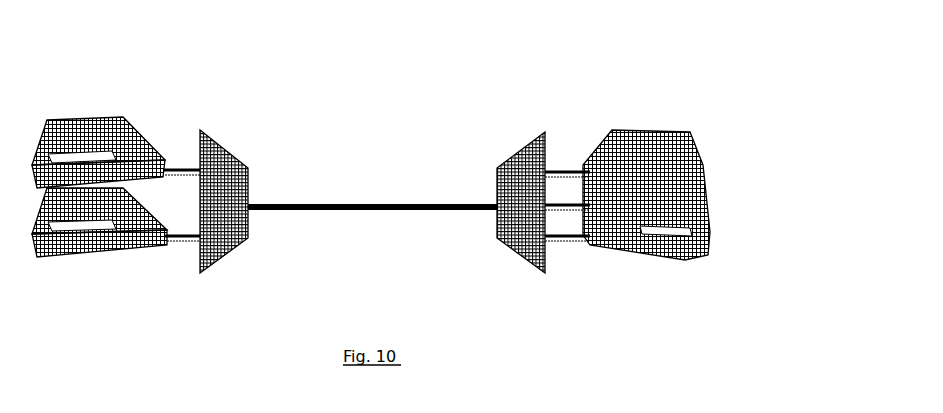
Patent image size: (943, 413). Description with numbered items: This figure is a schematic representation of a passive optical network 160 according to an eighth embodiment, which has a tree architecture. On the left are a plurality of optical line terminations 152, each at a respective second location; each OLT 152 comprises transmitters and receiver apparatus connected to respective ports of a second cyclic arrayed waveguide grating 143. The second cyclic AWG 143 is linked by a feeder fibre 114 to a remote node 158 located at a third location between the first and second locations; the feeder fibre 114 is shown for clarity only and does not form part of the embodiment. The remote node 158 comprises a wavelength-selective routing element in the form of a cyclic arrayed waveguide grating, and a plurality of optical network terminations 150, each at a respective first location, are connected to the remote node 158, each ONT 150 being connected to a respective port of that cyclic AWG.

The passive optical network 160 is at (322, 72).
The optical line termination 152 is at (93, 133).
The second cyclic arrayed waveguide grating 143 is at (232, 238).
The feeder fibre 114 is at (357, 203).
The remote node 158 is at (539, 253).
The optical network termination 150 is at (645, 132).